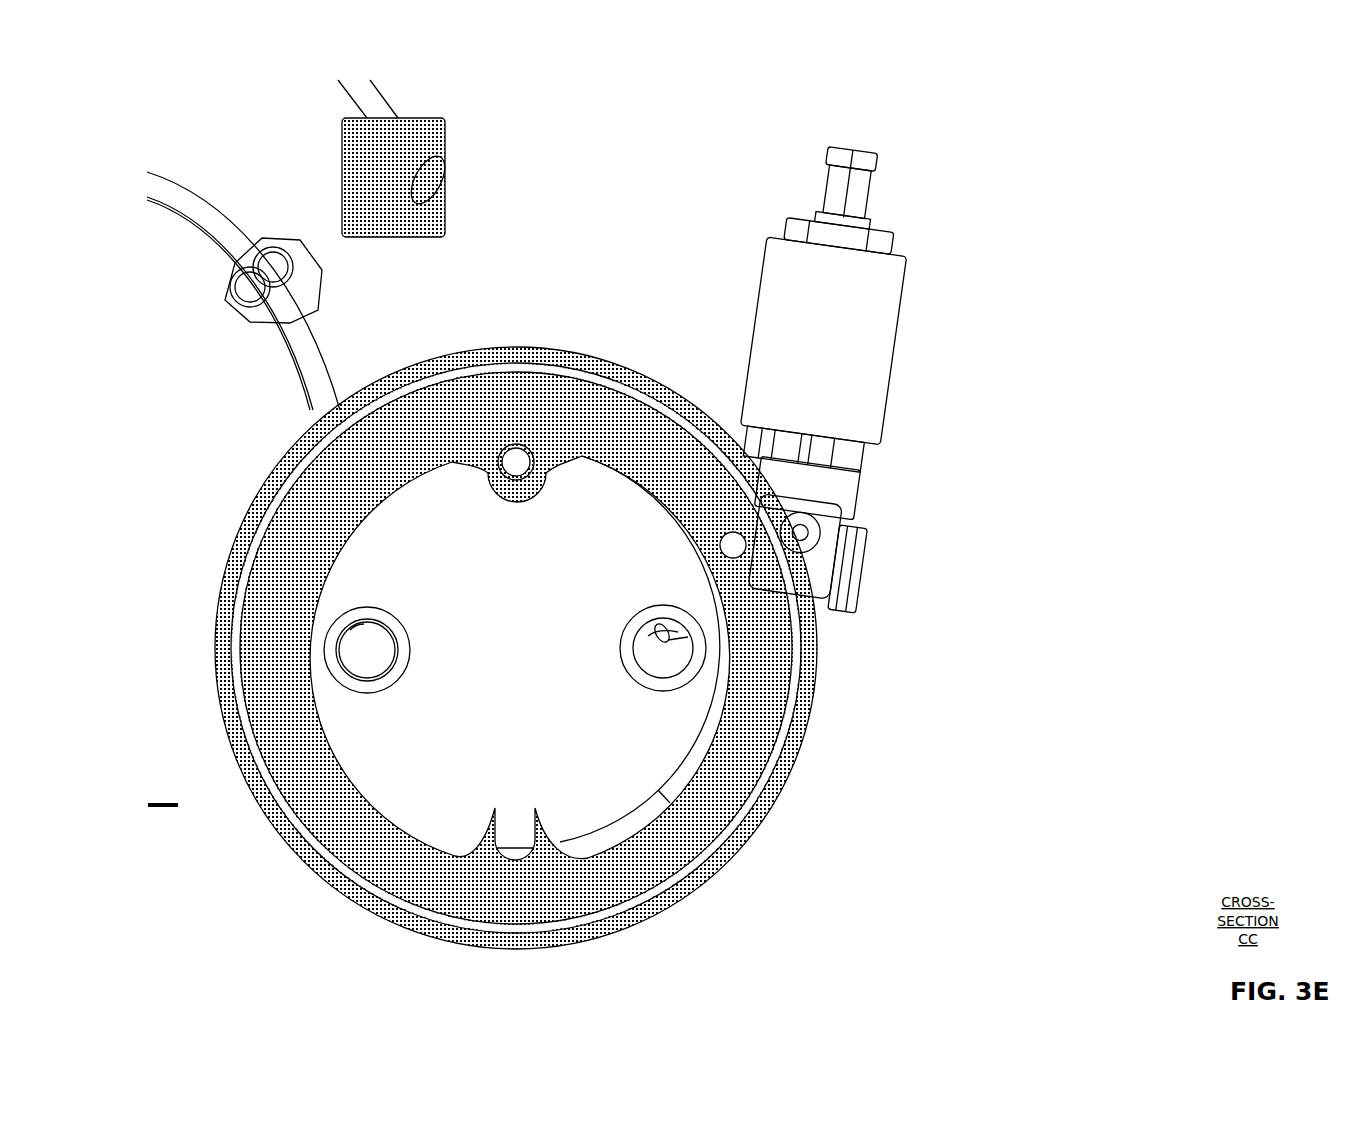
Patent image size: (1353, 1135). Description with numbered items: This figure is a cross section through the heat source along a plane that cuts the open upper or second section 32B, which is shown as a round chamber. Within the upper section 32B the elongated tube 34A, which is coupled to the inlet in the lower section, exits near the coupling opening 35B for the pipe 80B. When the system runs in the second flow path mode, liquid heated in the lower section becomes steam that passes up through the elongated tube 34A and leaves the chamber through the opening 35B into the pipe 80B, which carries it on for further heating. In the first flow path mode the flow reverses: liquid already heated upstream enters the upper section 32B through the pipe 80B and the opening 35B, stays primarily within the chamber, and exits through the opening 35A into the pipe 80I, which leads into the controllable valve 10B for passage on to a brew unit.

The upper second section 32B is at (497, 630).
The elongated tube 34A is at (530, 482).
The opening 35A is at (661, 668).
The pipe coupling opening 35B is at (378, 652).
The pipe 80I is at (659, 622).
The pipe 80B is at (325, 325).
The controllable valve 10B is at (903, 348).